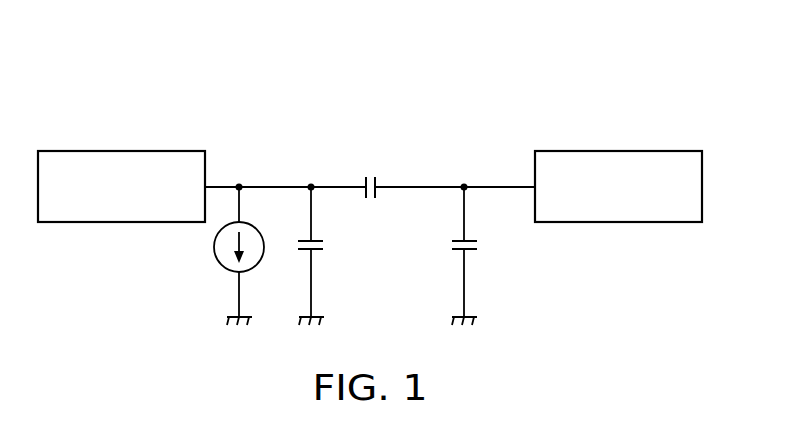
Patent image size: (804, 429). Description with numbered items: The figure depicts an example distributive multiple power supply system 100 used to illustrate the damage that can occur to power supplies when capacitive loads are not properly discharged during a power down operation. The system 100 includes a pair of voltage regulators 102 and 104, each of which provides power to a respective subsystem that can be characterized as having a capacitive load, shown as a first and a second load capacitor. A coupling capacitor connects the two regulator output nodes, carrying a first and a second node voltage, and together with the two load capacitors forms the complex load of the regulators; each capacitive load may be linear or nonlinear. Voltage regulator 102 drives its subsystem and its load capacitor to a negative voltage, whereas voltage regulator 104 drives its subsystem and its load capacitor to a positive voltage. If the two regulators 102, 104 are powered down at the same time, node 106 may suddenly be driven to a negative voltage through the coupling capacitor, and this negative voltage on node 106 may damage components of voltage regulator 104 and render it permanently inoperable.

The multiple power supply system 100 is at (272, 62).
The voltage regulator 102 is at (121, 151).
The voltage regulator 104 is at (618, 151).
The node 106 is at (457, 195).